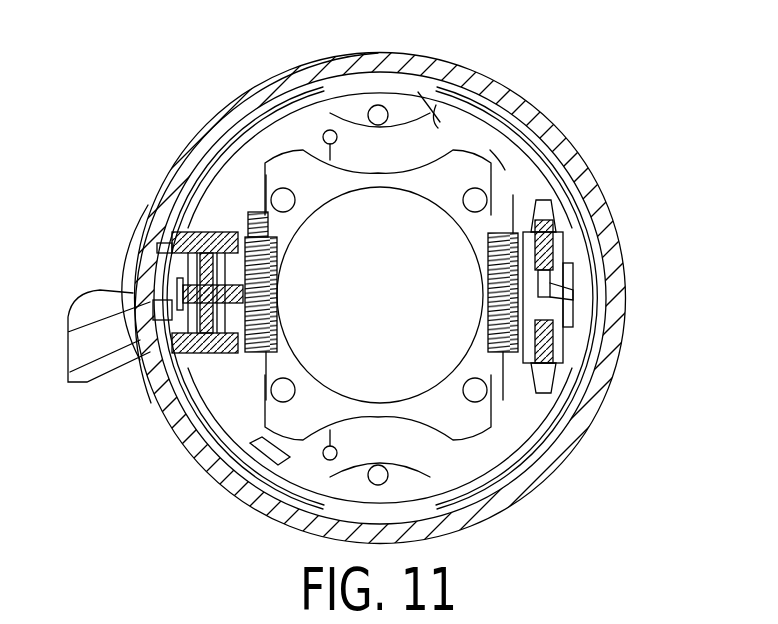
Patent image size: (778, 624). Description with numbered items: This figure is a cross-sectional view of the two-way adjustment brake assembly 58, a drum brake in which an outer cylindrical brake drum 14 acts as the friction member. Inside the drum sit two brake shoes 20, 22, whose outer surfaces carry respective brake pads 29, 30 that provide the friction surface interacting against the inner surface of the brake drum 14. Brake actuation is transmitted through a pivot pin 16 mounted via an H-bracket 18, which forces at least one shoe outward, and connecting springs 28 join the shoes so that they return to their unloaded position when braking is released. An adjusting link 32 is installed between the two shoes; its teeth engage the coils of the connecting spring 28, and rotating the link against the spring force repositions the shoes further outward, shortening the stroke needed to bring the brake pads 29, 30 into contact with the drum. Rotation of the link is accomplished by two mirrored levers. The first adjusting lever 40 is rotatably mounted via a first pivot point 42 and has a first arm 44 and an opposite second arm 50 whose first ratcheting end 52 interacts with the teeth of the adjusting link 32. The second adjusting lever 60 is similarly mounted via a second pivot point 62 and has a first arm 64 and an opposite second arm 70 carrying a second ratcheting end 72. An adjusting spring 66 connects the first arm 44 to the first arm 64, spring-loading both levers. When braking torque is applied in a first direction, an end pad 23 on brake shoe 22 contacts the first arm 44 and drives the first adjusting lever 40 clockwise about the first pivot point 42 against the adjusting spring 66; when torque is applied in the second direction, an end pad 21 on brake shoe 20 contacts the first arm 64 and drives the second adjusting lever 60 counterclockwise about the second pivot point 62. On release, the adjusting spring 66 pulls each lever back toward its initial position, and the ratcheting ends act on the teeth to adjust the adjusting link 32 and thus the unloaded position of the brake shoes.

The brake drum 14 is at (607, 187).
The pivot pin 16 is at (177, 290).
The H-bracket 18 is at (185, 240).
The brake shoe 20 is at (393, 63).
The end pad 21 is at (205, 238).
The brake shoe 22 is at (445, 517).
The end pad 23 is at (72, 358).
The connecting spring 28 is at (563, 187).
The brake pad 29 is at (375, 100).
The brake pad 30 is at (487, 463).
The adjusting link 32 is at (557, 297).
The first adjusting lever 40 is at (240, 500).
The first pivot point 42 is at (293, 517).
The first arm 44 is at (182, 443).
The second arm 50 is at (545, 398).
The first ratcheting end 52 is at (520, 332).
The two-way adjustment brake assembly 58 is at (108, 86).
The second adjusting lever 60 is at (440, 127).
The second pivot point 62 is at (329, 130).
The first arm 64 is at (197, 140).
The adjusting spring 66 is at (227, 190).
The second arm 70 is at (505, 163).
The second ratcheting end 72 is at (520, 273).